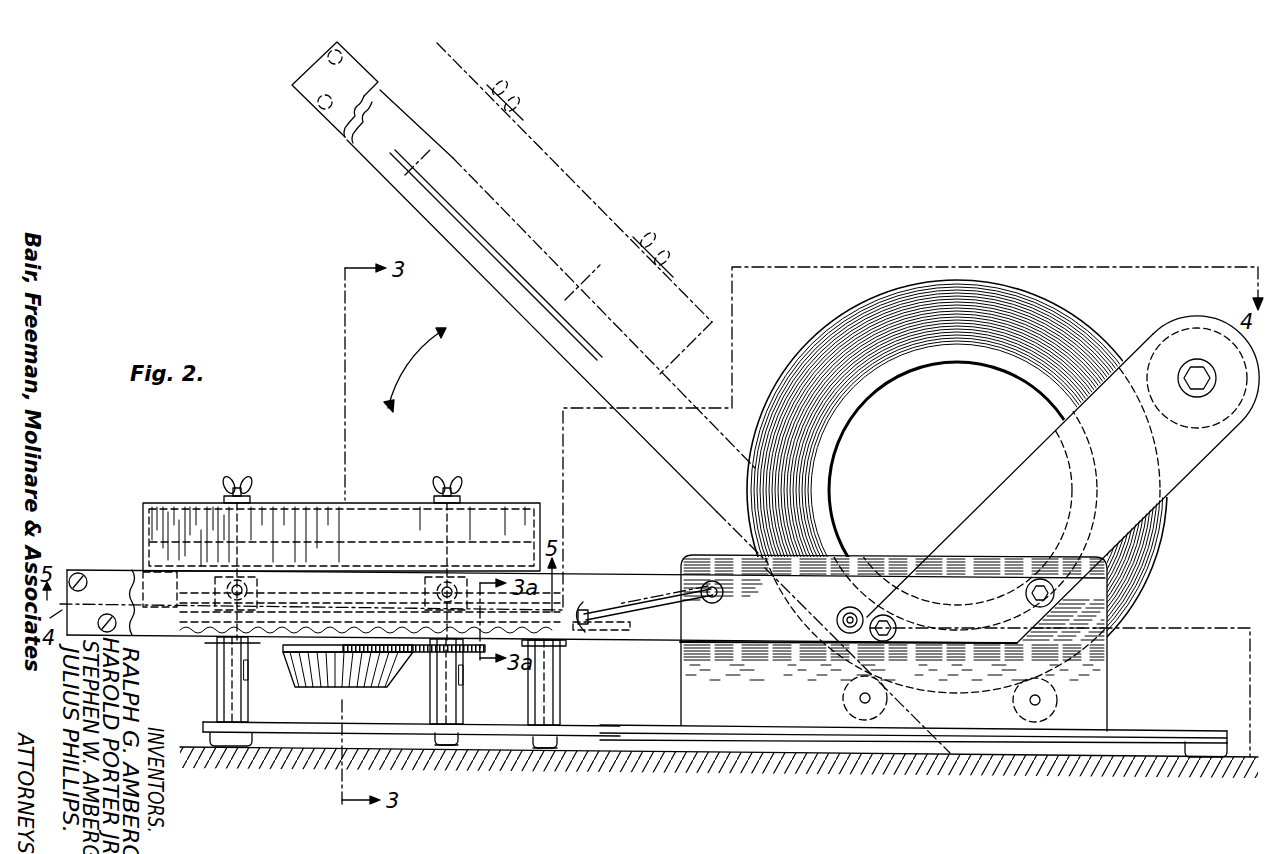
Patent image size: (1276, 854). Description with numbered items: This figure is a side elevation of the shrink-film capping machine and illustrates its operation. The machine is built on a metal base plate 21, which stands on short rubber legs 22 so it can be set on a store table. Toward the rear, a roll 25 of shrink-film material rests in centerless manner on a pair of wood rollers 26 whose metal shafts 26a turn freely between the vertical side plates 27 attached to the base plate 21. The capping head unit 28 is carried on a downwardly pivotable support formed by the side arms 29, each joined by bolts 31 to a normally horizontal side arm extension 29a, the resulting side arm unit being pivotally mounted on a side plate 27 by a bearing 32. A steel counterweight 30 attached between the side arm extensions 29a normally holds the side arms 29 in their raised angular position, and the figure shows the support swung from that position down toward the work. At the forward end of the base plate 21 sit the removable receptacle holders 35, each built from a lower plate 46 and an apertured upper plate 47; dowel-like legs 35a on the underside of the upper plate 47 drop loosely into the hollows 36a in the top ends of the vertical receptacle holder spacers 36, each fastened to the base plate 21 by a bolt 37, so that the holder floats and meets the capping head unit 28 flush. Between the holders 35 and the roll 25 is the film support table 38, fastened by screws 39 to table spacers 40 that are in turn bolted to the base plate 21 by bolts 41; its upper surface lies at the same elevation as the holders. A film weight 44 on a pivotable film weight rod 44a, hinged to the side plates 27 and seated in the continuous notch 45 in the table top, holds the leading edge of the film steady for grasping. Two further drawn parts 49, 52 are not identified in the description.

The base plate 21 is at (648, 733).
The rubber legs 22 is at (228, 750).
The roll 25 is at (945, 286).
The wood rollers 26 is at (1052, 681).
The metal shafts 26a is at (1042, 702).
The vertical side plates 27 is at (692, 672).
The capping head unit 28 is at (607, 220).
The side arms 29 is at (736, 632).
The side arm extensions 29a is at (1170, 468).
The counterweight 30 is at (1176, 345).
The bolts 31 is at (1040, 580).
The bearings 32 is at (844, 609).
The receptacle holders 35 is at (408, 652).
The dowel-like legs 35a is at (225, 668).
The receptacle holder spacers 36 is at (218, 710).
The hollows 36a is at (248, 680).
The bolt 37 is at (452, 750).
The film support table 38 is at (605, 627).
The screws 39 is at (560, 678).
The table spacers 40 is at (560, 703).
The bolts 41 is at (545, 752).
The film weight 44 is at (620, 600).
The film weight rod 44a is at (668, 582).
The notch 45 is at (565, 648).
The lower plate 46 is at (210, 656).
The upper plate 47 is at (200, 640).
The slide bar 49 is at (200, 623).
The end block 52 is at (198, 600).